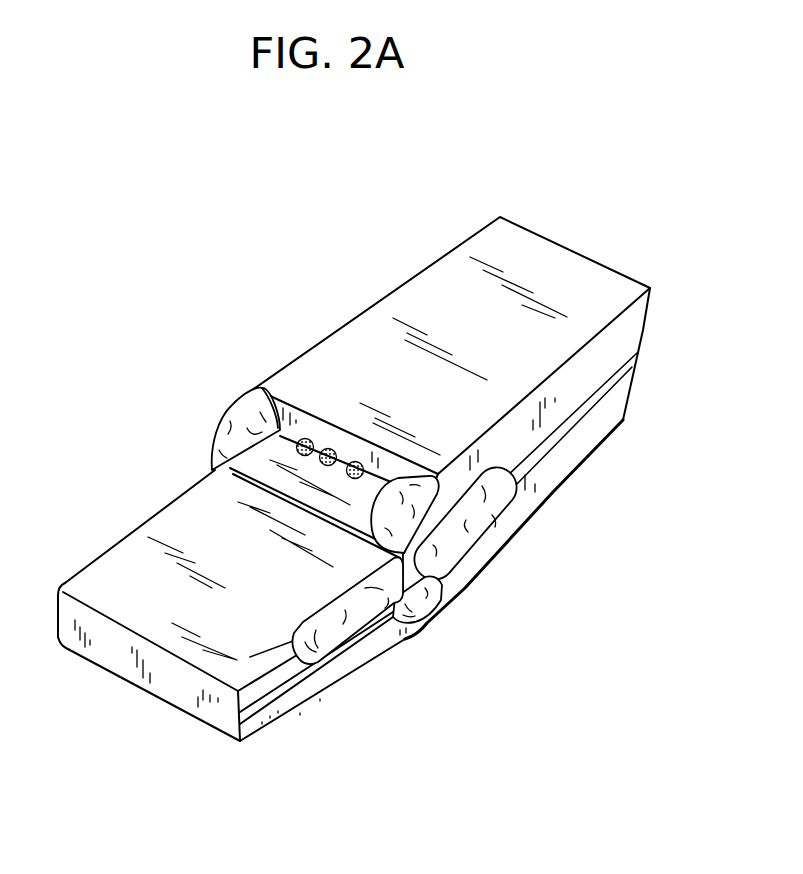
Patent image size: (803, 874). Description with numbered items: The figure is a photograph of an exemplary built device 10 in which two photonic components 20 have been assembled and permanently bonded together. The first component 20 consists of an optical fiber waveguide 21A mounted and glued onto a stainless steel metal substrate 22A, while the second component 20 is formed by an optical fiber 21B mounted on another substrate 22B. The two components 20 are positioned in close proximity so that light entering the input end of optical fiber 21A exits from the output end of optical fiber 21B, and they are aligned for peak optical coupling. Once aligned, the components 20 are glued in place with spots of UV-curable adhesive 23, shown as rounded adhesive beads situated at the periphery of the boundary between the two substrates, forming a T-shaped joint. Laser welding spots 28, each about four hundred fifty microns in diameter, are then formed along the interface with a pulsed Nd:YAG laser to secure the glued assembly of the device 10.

The device 10 is at (392, 124).
The components 20 is at (371, 285).
The optical fiber waveguide 21A is at (275, 704).
The optical fiber waveguide 21B is at (594, 451).
The metal substrate 22A is at (138, 695).
The substrate 22B is at (580, 248).
The adhesive 23 is at (220, 407).
The welding spot 28 is at (355, 462).